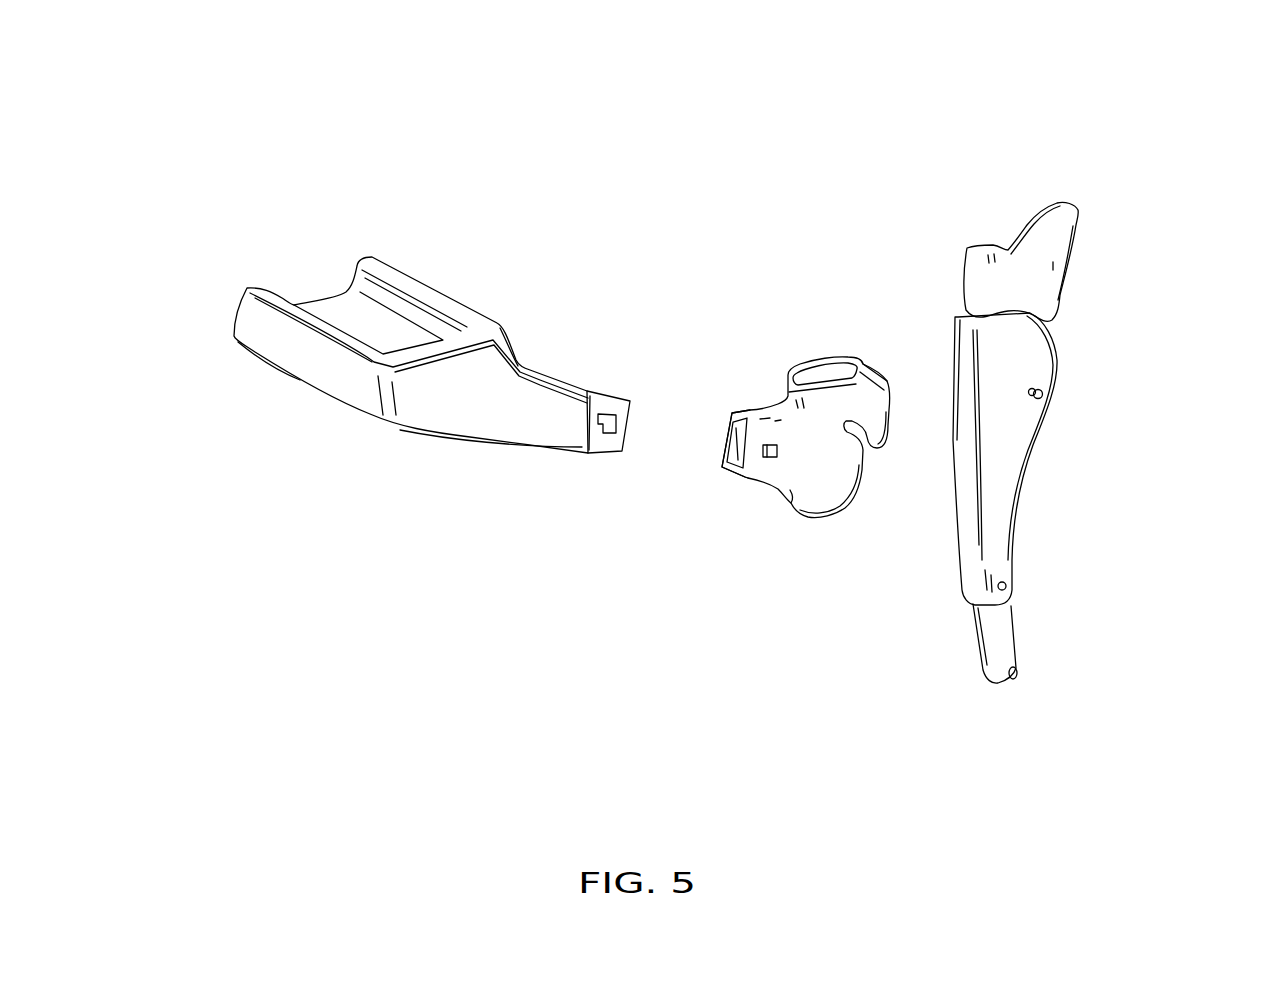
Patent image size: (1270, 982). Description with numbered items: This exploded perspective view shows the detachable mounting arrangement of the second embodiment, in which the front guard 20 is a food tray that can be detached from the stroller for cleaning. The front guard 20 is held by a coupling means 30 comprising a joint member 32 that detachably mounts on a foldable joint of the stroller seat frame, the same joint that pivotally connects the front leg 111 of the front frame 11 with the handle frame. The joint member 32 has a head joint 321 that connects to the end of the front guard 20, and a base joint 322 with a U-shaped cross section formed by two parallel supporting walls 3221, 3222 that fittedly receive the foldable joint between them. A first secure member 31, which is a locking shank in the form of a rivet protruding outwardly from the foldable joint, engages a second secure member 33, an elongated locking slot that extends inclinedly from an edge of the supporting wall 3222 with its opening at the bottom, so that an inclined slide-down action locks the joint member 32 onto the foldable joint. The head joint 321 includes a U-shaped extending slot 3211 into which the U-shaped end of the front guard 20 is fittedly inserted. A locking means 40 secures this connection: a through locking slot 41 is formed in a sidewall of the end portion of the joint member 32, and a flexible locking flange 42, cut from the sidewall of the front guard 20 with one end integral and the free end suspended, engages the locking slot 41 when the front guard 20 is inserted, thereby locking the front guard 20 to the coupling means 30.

The front guard 20 is at (432, 469).
The locking means 40 is at (543, 536).
The locking flange 42 is at (600, 430).
The joint member 32 is at (700, 370).
The base joint 322 is at (811, 350).
The supporting wall 3221 is at (822, 368).
The supporting wall 3222 is at (880, 396).
The extending slot 3211 is at (727, 432).
The head joint 321 is at (715, 460).
The locking slot 41 is at (780, 453).
The second secure member 33 is at (872, 458).
The coupling means 30 is at (1090, 435).
The first secure member 31 is at (1046, 394).
The front frame 11 is at (1090, 569).
The front leg 111 is at (997, 642).